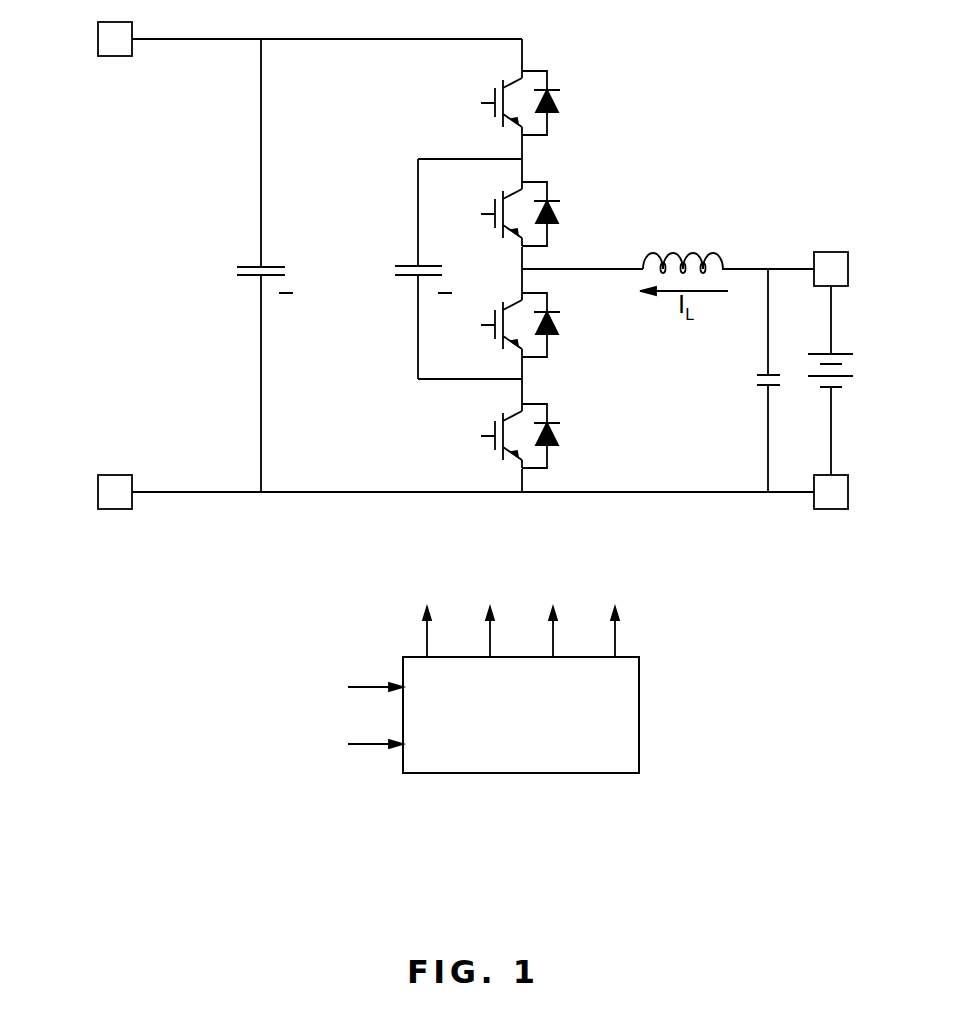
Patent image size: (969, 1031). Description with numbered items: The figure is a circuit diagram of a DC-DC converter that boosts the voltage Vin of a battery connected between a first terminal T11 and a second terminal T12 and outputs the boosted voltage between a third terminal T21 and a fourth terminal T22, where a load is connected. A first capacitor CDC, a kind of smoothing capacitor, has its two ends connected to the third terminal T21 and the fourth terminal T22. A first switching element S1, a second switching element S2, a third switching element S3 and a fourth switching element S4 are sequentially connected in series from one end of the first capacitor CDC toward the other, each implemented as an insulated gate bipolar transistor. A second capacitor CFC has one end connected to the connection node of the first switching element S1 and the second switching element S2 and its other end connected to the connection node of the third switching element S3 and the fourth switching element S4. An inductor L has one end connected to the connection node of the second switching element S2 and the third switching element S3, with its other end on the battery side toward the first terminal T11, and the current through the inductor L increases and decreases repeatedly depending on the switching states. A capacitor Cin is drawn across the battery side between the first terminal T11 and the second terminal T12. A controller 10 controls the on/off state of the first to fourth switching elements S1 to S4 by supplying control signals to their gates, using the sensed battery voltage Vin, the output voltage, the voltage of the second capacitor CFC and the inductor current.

The controller 10 is at (520, 773).
The first switching element S1 is at (537, 103).
The second switching element S2 is at (537, 214).
The third switching element S3 is at (537, 325).
The fourth switching element S4 is at (537, 436).
The first terminal T11 is at (858, 269).
The second terminal T12 is at (858, 492).
The third terminal T21 is at (90, 39).
The fourth terminal T22 is at (90, 492).
The first capacitor CDC is at (270, 265).
The second capacitor CFC is at (442, 269).
The inductor L is at (683, 249).
The input capacitor Cin is at (749, 380).
The voltage of the battery Vin is at (849, 380).